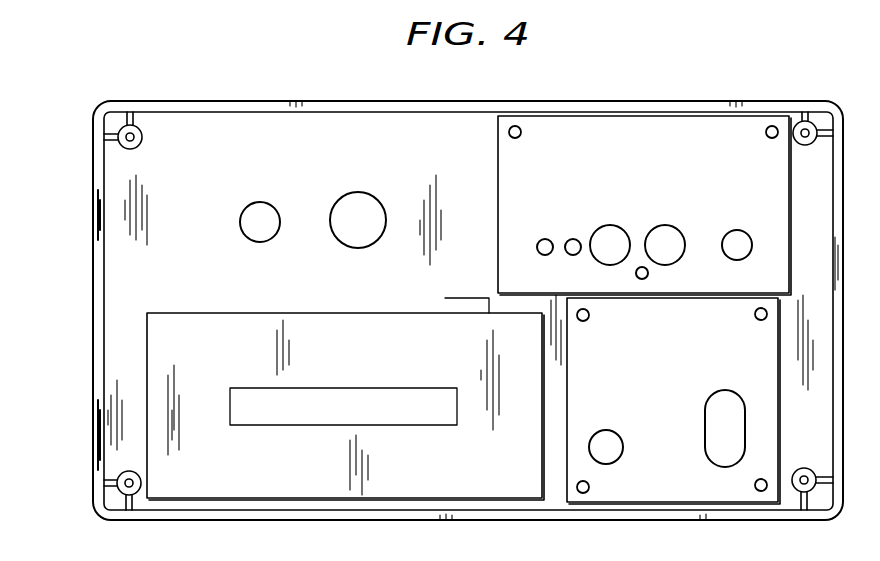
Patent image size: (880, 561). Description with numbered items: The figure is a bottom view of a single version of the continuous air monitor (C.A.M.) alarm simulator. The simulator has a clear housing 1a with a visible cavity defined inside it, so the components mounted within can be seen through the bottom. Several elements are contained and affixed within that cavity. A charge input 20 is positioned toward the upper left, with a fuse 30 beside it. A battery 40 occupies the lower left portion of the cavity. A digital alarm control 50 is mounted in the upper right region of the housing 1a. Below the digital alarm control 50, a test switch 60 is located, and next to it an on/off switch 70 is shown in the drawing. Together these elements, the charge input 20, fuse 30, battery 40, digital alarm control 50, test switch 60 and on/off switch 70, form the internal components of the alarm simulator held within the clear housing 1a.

The clear housing 1a is at (78, 298).
The charge input 20 is at (263, 208).
The fuse 30 is at (367, 207).
The battery 40 is at (197, 318).
The digital alarm control 50 is at (788, 195).
The test switch 60 is at (622, 443).
The on/off switch 70 is at (712, 414).